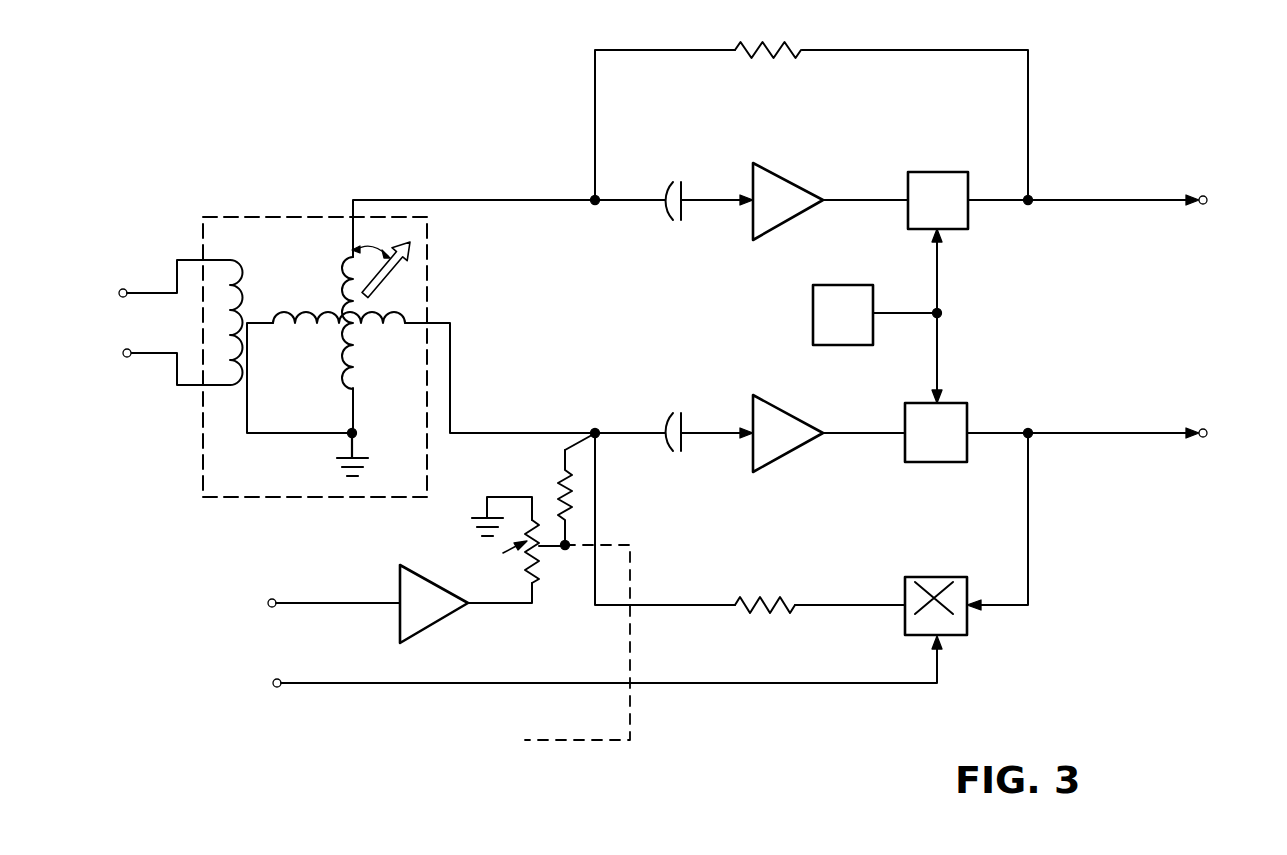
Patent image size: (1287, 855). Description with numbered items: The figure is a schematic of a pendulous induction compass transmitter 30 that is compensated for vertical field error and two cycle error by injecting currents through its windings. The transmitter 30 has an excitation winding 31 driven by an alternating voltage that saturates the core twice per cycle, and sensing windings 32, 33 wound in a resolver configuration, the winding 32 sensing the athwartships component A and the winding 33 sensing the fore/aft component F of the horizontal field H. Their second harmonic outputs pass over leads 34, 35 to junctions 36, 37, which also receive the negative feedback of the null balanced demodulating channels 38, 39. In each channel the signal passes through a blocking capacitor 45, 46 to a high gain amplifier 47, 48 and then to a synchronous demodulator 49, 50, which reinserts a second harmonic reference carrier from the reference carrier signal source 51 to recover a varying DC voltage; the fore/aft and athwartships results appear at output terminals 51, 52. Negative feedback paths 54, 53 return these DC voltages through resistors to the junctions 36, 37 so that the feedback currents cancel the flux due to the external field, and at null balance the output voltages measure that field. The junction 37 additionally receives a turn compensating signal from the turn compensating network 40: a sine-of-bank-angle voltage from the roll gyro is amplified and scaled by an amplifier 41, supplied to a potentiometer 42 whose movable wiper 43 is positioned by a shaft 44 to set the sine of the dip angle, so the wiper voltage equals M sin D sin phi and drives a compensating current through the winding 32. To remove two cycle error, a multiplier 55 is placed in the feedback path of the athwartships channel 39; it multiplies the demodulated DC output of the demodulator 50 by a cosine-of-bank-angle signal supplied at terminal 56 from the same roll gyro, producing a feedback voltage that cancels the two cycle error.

The pendulous induction compass transmitter 30 is at (223, 470).
The excitation winding 31 is at (240, 268).
The sensing winding 32 is at (373, 328).
The sensing winding 33 is at (340, 288).
The lead 34 is at (413, 200).
The lead 35 is at (452, 370).
The junction 36 is at (595, 200).
The junction 37 is at (595, 430).
The demodulating channel 38 is at (797, 198).
The demodulating channel 39 is at (793, 440).
The turn compensating network 40 is at (547, 652).
The amplifier 41 is at (427, 628).
The potentiometer 42 is at (503, 553).
The movable wiper 43 is at (548, 550).
The shaft 44 is at (633, 730).
The blocking capacitor 45 is at (673, 226).
The blocking capacitor 46 is at (685, 413).
The high gain amplifier 47 is at (797, 186).
The high gain amplifier 48 is at (775, 466).
The synchronous demodulator 49 is at (948, 172).
The synchronous demodulator 50 is at (955, 403).
The reference carrier signal source 51 is at (889, 262).
The output terminal 52 is at (1207, 433).
The feedback path 53 is at (784, 577).
The feedback path 54 is at (784, 26).
The multiplier 55 is at (957, 577).
The terminal 56 is at (274, 690).